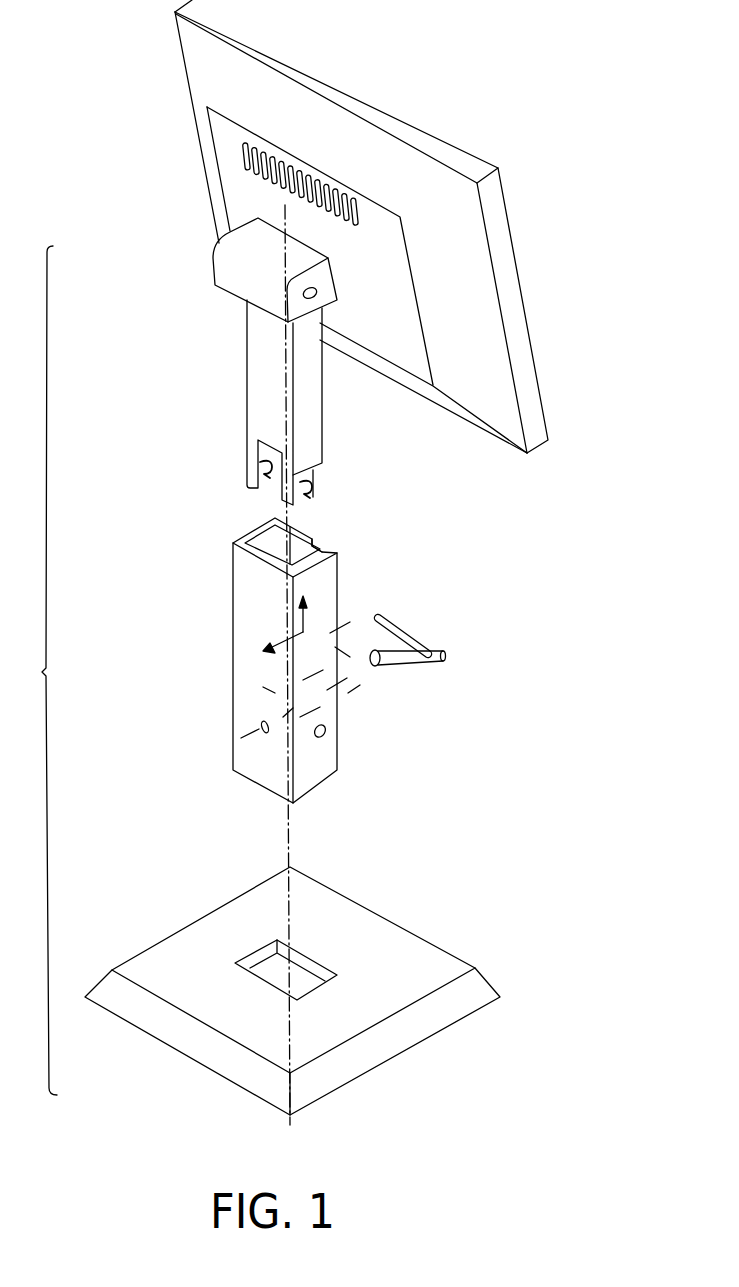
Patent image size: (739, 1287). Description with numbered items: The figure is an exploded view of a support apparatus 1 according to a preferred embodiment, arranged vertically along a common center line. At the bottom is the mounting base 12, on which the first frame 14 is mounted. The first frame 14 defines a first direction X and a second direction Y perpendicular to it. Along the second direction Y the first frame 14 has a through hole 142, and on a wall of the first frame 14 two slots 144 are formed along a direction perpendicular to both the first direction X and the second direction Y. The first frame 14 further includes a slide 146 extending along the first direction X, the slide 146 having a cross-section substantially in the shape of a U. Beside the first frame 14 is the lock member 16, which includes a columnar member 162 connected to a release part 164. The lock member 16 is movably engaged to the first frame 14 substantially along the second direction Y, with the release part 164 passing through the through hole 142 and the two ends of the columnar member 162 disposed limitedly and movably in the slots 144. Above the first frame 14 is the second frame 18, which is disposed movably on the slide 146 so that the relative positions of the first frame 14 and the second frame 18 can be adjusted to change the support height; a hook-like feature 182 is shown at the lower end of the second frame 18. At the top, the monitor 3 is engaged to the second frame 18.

The support apparatus 1 is at (36, 670).
The monitor 3 is at (340, 82).
The mounting base 12 is at (380, 920).
The first frame 14 is at (240, 612).
The through hole 142 is at (262, 732).
The slot 144 is at (317, 737).
The slide 146 is at (297, 551).
The lock member 16 is at (431, 704).
The columnar member 162 is at (430, 656).
The release part 164 is at (388, 666).
The second frame 18 is at (260, 413).
The hook 182 is at (305, 497).